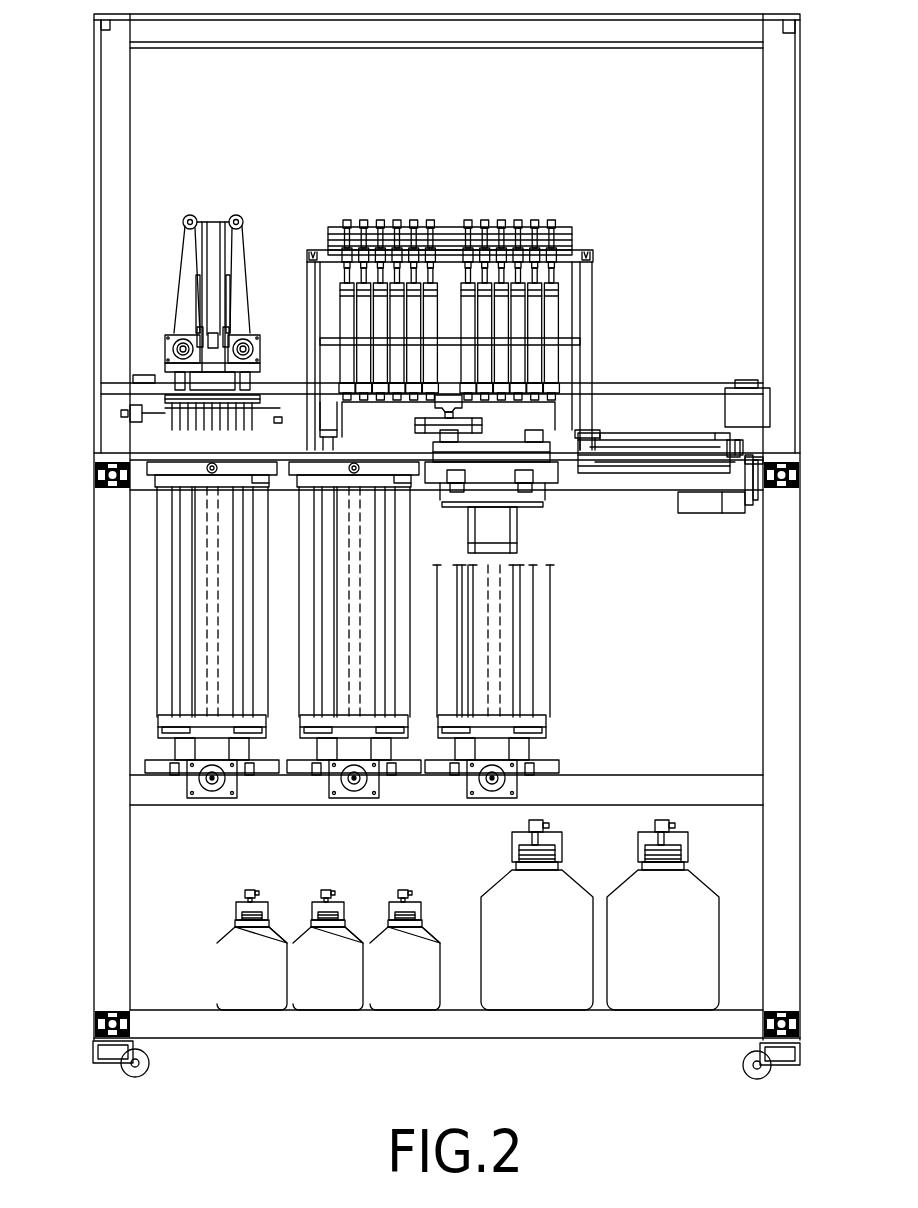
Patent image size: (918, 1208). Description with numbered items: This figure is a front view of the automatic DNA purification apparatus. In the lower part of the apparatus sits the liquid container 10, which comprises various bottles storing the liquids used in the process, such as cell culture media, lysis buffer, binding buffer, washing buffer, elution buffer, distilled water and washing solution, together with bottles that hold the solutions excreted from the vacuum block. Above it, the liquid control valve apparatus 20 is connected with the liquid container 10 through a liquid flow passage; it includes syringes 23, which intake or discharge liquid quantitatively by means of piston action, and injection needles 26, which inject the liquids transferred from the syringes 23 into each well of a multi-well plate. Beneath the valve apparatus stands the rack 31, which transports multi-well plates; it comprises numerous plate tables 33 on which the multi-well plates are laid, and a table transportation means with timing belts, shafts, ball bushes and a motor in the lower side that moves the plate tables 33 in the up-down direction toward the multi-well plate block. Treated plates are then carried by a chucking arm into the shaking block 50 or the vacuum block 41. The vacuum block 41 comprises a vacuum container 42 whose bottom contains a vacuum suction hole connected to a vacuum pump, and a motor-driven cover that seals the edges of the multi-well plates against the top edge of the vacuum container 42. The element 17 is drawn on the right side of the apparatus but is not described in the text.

The liquid container 10 is at (738, 855).
The control box 17 is at (752, 407).
The liquid control valve apparatus 20 is at (492, 305).
The syringes 23 is at (552, 310).
The injection needles 26 is at (162, 418).
The rack 31 is at (163, 655).
The plate table 33 is at (163, 725).
The vacuum block 41 is at (650, 433).
The vacuum container 42 is at (693, 452).
The shaking block 50 is at (527, 500).